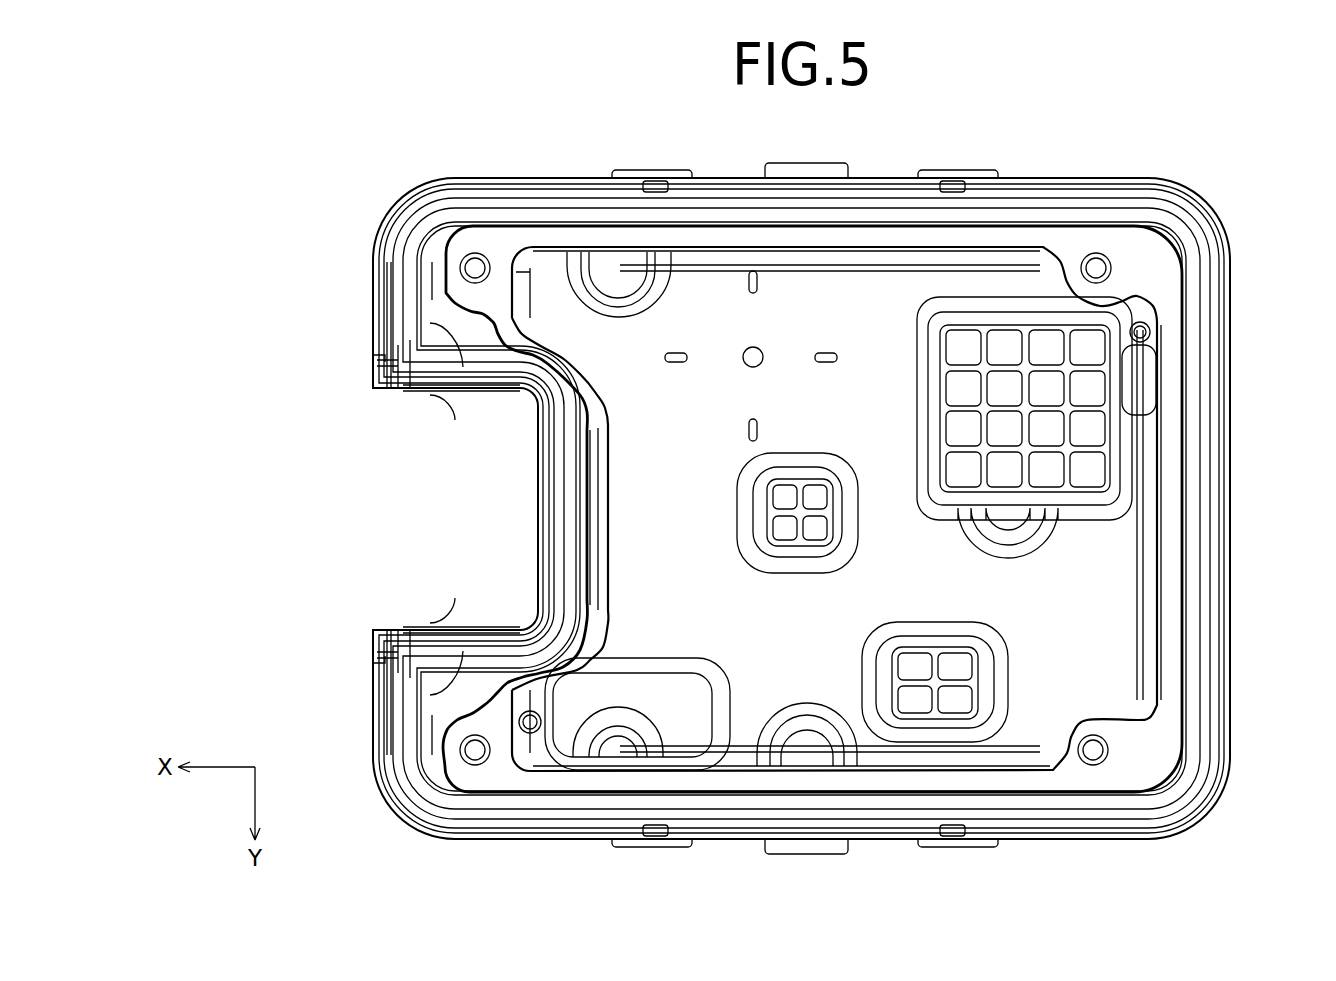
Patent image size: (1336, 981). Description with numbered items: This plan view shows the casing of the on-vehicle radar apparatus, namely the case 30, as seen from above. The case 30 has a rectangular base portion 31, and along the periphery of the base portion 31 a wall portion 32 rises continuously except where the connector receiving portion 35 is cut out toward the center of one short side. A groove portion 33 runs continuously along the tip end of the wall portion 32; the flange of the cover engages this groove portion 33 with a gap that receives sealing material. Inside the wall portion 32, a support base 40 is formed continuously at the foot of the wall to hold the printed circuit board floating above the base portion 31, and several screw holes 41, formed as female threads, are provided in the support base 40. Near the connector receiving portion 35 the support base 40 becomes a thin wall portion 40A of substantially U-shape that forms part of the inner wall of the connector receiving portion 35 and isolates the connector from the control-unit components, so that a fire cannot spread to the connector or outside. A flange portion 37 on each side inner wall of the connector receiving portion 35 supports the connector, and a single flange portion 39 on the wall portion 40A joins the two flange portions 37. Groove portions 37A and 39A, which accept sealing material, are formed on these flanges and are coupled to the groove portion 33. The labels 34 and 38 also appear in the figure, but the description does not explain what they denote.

The case 30 is at (352, 178).
The base portion 31 is at (1088, 585).
The wall portion 32 is at (440, 805).
The groove portion 33 is at (424, 790).
The engagement tab 34 is at (655, 170).
The connector receiving portion 35 is at (368, 506).
The flange portion 37 is at (462, 398).
The groove portion 37A is at (470, 355).
The recessed wall 38 is at (538, 525).
The flange portion 39 is at (538, 493).
The groove portion 39A is at (564, 573).
The support base 40 is at (1190, 775).
The wall portion 40A is at (600, 463).
The screw holes 41 is at (475, 268).